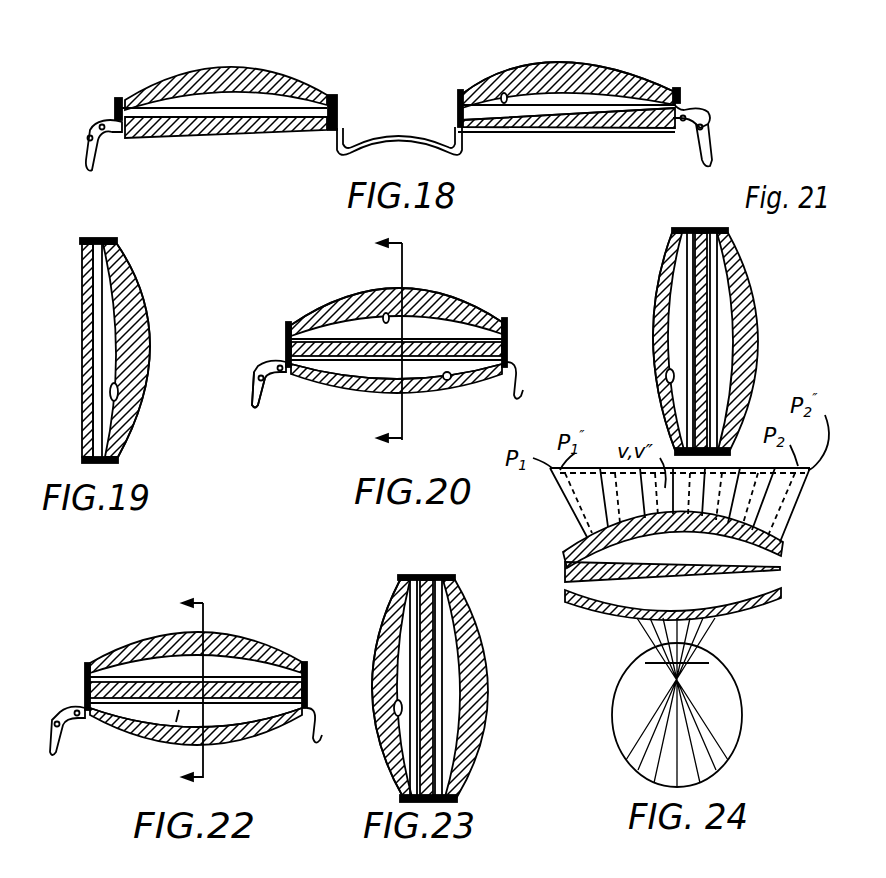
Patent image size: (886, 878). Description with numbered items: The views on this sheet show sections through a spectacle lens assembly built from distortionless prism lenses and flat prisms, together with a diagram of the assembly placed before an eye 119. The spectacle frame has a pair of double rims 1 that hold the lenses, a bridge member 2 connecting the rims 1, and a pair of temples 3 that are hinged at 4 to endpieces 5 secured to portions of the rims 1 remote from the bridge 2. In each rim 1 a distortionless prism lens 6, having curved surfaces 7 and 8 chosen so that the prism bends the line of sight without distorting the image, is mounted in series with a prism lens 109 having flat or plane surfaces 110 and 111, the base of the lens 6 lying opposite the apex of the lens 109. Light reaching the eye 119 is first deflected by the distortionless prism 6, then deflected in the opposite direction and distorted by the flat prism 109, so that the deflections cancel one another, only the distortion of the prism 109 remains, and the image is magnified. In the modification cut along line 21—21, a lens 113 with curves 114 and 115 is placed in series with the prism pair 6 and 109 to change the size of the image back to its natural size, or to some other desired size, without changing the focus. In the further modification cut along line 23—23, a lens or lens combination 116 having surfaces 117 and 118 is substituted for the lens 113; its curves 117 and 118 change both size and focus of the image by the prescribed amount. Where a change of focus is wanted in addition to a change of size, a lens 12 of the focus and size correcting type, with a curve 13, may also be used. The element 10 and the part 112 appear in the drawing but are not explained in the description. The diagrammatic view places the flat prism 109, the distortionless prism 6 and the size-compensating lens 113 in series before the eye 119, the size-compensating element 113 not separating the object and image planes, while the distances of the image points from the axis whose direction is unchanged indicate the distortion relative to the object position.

In FIG. 18, the double rims 1 is at (688, 86).
In FIG. 19, the double rims 1 is at (110, 241).
In FIG. 18, the bridge member 2 is at (424, 147).
In FIG. 20, the bridge member 2 is at (520, 380).
In FIG. 22, the bridge member 2 is at (304, 746).
In FIG. 18, the temples 3 is at (86, 168).
In FIG. 20, the temples 3 is at (254, 398).
In FIG. 22, the temples 3 is at (67, 731).
In FIG. 18, the hinge 4 is at (708, 113).
In FIG. 18, the endpieces 5 is at (100, 126).
In FIG. 20, the endpieces 5 is at (275, 364).
In FIG. 18, the distortionless prism lens 6 is at (180, 72).
In FIG. 19, the distortionless prism lens 6 is at (132, 352).
In FIG. 20, the distortionless prism lens 6 is at (418, 295).
In FIG. 21, the distortionless prism lens 6 is at (750, 336).
In FIG. 22, the distortionless prism lens 6 is at (153, 640).
In FIG. 23, the distortionless prism lens 6 is at (486, 710).
In FIG. 24, the distortionless prism lens 6 is at (775, 525).
In FIG. 18, the curved surface 7 is at (542, 66).
In FIG. 19, the curved surface 7 is at (151, 378).
In FIG. 20, the curved surface 7 is at (450, 288).
In FIG. 18, the curved surface 8 is at (505, 93).
In FIG. 19, the curved surface 8 is at (118, 396).
In FIG. 20, the curved surface 8 is at (385, 313).
In FIG. 18, the upper surface of plate 10 is at (557, 121).
In FIG. 20, the focus and size correcting lens 12 is at (507, 333).
In FIG. 24, the lens curve 13 is at (773, 600).
In FIG. 20, the section line 21 is at (403, 342).
In FIG. 22, the section line 23 is at (212, 690).
In FIG. 18, the flat prism lens 109 is at (203, 136).
In FIG. 19, the flat prism lens 109 is at (88, 371).
In FIG. 20, the flat prism lens 109 is at (378, 350).
In FIG. 21, the flat prism lens 109 is at (705, 350).
In FIG. 22, the flat prism lens 109 is at (160, 690).
In FIG. 23, the flat prism lens 109 is at (436, 697).
In FIG. 24, the flat prism lens 109 is at (697, 568).
In FIG. 19, the plane surface 110 is at (99, 305).
In FIG. 20, the plane surface 110 is at (396, 342).
In FIG. 18, the plane surface 111 is at (626, 133).
In FIG. 19, the plane surface 111 is at (82, 334).
In FIG. 20, the plane surface 111 is at (392, 361).
In FIG. 21, the frame bar 112 is at (700, 229).
In FIG. 23, the frame bar 112 is at (450, 576).
In FIG. 20, the size-compensating lens 113 is at (421, 396).
In FIG. 21, the size-compensating lens 113 is at (661, 338).
In FIG. 20, the lens curve 114 is at (450, 387).
In FIG. 21, the lens curve 114 is at (670, 380).
In FIG. 20, the lens curve 115 is at (396, 393).
In FIG. 21, the lens curve 115 is at (658, 368).
In FIG. 22, the size and focus changing lens 116 is at (186, 746).
In FIG. 23, the size and focus changing lens 116 is at (378, 676).
In FIG. 22, the lens surface 117 is at (186, 717).
In FIG. 23, the lens surface 117 is at (396, 712).
In FIG. 22, the lens surface 118 is at (160, 742).
In FIG. 23, the lens surface 118 is at (372, 698).
In FIG. 24, the eye 119 is at (718, 735).